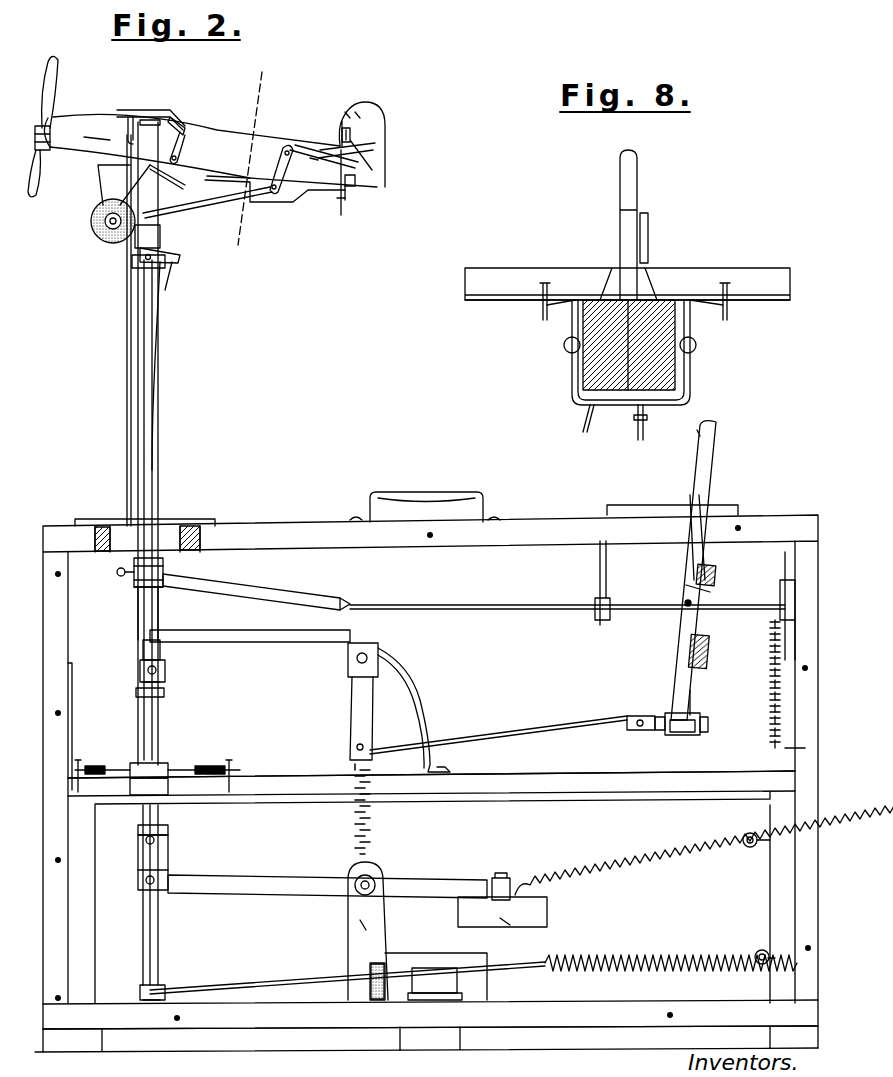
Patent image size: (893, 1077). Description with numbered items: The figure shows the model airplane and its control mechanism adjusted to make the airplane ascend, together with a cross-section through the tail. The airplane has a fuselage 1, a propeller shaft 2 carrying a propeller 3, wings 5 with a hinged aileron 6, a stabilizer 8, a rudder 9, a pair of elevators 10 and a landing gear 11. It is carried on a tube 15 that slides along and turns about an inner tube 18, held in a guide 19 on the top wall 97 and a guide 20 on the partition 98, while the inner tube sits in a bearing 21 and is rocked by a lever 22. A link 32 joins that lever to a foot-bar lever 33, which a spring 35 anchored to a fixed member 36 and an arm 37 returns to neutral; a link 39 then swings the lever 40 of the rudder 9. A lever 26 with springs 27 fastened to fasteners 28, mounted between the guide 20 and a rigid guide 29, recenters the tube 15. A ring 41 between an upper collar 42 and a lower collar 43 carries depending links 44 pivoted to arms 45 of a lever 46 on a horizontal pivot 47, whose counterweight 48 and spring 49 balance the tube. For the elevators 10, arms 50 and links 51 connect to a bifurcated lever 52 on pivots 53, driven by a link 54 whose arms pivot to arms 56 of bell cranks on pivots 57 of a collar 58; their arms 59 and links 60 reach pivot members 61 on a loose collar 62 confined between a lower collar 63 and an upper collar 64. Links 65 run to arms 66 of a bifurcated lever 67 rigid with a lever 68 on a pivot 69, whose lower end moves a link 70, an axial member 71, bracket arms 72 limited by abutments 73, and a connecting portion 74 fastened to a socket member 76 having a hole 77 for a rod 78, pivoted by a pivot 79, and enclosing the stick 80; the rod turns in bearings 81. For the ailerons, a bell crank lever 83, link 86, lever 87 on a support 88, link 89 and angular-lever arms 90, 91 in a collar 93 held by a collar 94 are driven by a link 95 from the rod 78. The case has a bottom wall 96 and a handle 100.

In FIG. 2, the fuselage 1 is at (213, 130).
In FIG. 8, the fuselage 1 is at (650, 275).
In FIG. 2, the propeller shaft 2 is at (48, 125).
In FIG. 2, the propeller 3 is at (52, 70).
In FIG. 2, the wings 5 is at (147, 112).
In FIG. 2, the aileron 6 is at (183, 125).
In FIG. 2, the stabilizer 8 is at (320, 145).
In FIG. 8, the stabilizer 8 is at (777, 300).
In FIG. 2, the rudder 9 is at (378, 118).
In FIG. 8, the rudder 9 is at (630, 170).
In FIG. 2, the elevators 10 is at (375, 143).
In FIG. 8, the elevators 10 is at (705, 268).
In FIG. 2, the landing gear 11 is at (92, 222).
In FIG. 2, the tube 15 is at (150, 372).
In FIG. 2, the tube 18 is at (148, 930).
In FIG. 2, the guide 19 is at (175, 522).
In FIG. 2, the guide 20 is at (145, 790).
In FIG. 2, the bearing 21 is at (148, 1015).
In FIG. 2, the lever 22 is at (165, 993).
In FIG. 2, the lever 26 is at (178, 770).
In FIG. 2, the springs 27 is at (208, 765).
In FIG. 2, the stationary fasteners 28 is at (232, 765).
In FIG. 2, the rigid guide 29 is at (160, 765).
In FIG. 2, the link 32 is at (300, 975).
In FIG. 2, the lever 33 is at (430, 985).
In FIG. 2, the spring 35 is at (705, 975).
In FIG. 2, the fixed member 36 is at (757, 952).
In FIG. 2, the arm 37 is at (545, 968).
In FIG. 2, the link 39 is at (287, 208).
In FIG. 8, the link 39 is at (592, 430).
In FIG. 2, the lever 40 is at (341, 200).
In FIG. 2, the ring 41 is at (160, 843).
In FIG. 2, the upper collar 42 is at (165, 835).
In FIG. 2, the lower collar 43 is at (138, 875).
In FIG. 2, the depending links 44 is at (158, 862).
In FIG. 2, the arms 45 is at (172, 888).
In FIG. 2, the lever 46 is at (290, 895).
In FIG. 2, the horizontal pivot 47 is at (372, 883).
In FIG. 2, the counterweight 48 is at (547, 915).
In FIG. 2, the spring 49 is at (680, 845).
In FIG. 2, the arm 50 is at (375, 158).
In FIG. 8, the arm 50 is at (730, 308).
In FIG. 2, the links 51 is at (355, 186).
In FIG. 8, the links 51 is at (720, 312).
In FIG. 2, the bifurcated lever 52 is at (283, 140).
In FIG. 8, the bifurcated lever 52 is at (690, 378).
In FIG. 2, the pivots 53 is at (282, 150).
In FIG. 8, the pivots 53 is at (692, 348).
In FIG. 2, the link 54 is at (207, 205).
In FIG. 2, the arms 56 is at (140, 240).
In FIG. 2, the pivots 57 is at (133, 262).
In FIG. 8, the pivots 57 is at (645, 425).
In FIG. 2, the collar 58 is at (165, 250).
In FIG. 2, the arms 59 is at (175, 268).
In FIG. 2, the links 60 is at (160, 430).
In FIG. 2, the pivot members 61 is at (165, 670).
In FIG. 2, the collar 62 is at (143, 672).
In FIG. 2, the lower collar 63 is at (140, 695).
In FIG. 2, the upper collar 64 is at (143, 605).
In FIG. 2, the links 65 is at (140, 650).
In FIG. 2, the arms 66 is at (170, 633).
In FIG. 2, the bifurcated lever 67 is at (262, 640).
In FIG. 2, the lever 68 is at (358, 710).
In FIG. 2, the pivot 69 is at (365, 657).
In FIG. 2, the link 70 is at (520, 730).
In FIG. 2, the axial member 71 is at (678, 737).
In FIG. 2, the arms 72 is at (690, 738).
In FIG. 2, the abutments 73 is at (700, 722).
In FIG. 2, the connecting portion 74 is at (690, 712).
In FIG. 2, the socket member 76 is at (705, 555).
In FIG. 2, the hole 77 is at (698, 590).
In FIG. 2, the rod 78 is at (572, 610).
In FIG. 2, the pivot 79 is at (687, 603).
In FIG. 2, the operating lever or stick 80 is at (712, 437).
In FIG. 2, the bearings 81 is at (785, 590).
In FIG. 2, the bell crank lever 83 is at (182, 185).
In FIG. 2, the link 86 is at (158, 120).
In FIG. 2, the lever 87 is at (130, 140).
In FIG. 2, the support 88 is at (133, 115).
In FIG. 2, the link 89 is at (127, 345).
In FIG. 2, the arm 90 is at (120, 574).
In FIG. 2, the arm 91 is at (172, 587).
In FIG. 2, the collar 93 is at (165, 575).
In FIG. 2, the collar 94 is at (165, 562).
In FIG. 2, the link 95 is at (268, 592).
In FIG. 2, the bottom wall 96 is at (325, 1035).
In FIG. 2, the top wall 97 is at (312, 530).
In FIG. 2, the intermediate horizontal partition 98 is at (536, 793).
In FIG. 2, the handle 100 is at (448, 492).